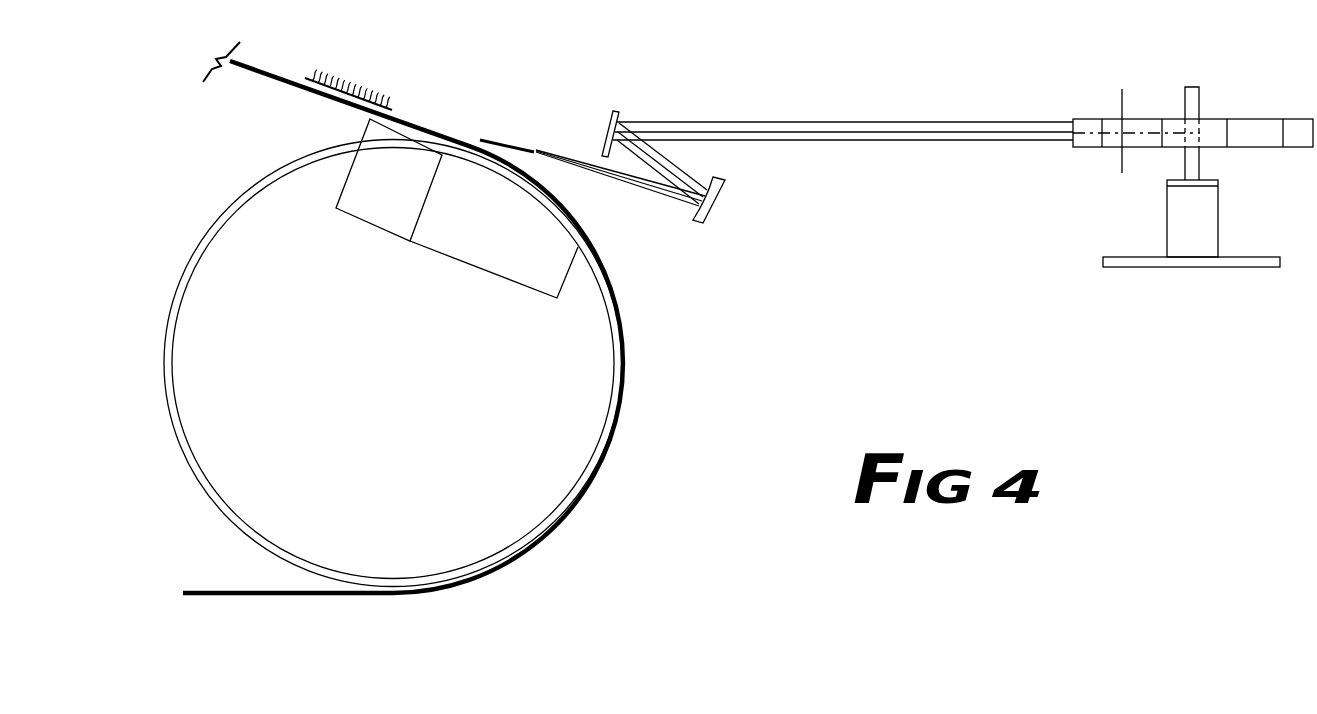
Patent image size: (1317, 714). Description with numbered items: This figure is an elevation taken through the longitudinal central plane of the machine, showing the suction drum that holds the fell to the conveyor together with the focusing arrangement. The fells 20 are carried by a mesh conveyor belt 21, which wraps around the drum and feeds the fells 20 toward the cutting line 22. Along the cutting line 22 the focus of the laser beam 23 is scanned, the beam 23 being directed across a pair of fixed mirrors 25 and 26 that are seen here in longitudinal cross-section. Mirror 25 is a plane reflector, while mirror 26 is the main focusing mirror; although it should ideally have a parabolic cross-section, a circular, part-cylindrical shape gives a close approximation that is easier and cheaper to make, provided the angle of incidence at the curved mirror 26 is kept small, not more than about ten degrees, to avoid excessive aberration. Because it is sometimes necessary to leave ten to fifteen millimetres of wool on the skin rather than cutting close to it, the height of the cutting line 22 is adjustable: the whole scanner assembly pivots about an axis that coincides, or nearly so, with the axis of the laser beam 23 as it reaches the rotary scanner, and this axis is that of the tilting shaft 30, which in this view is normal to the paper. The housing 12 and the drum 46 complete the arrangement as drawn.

The light source housing 12 is at (463, 253).
The fells 20 is at (372, 88).
The mesh conveyor belt 21 is at (249, 66).
The cutting line 22 is at (485, 138).
The laser beam 23 is at (536, 150).
The mirror 25 is at (613, 111).
The mirror 26 is at (727, 187).
The tilting shaft 30 is at (1122, 132).
The drum 46 is at (623, 358).